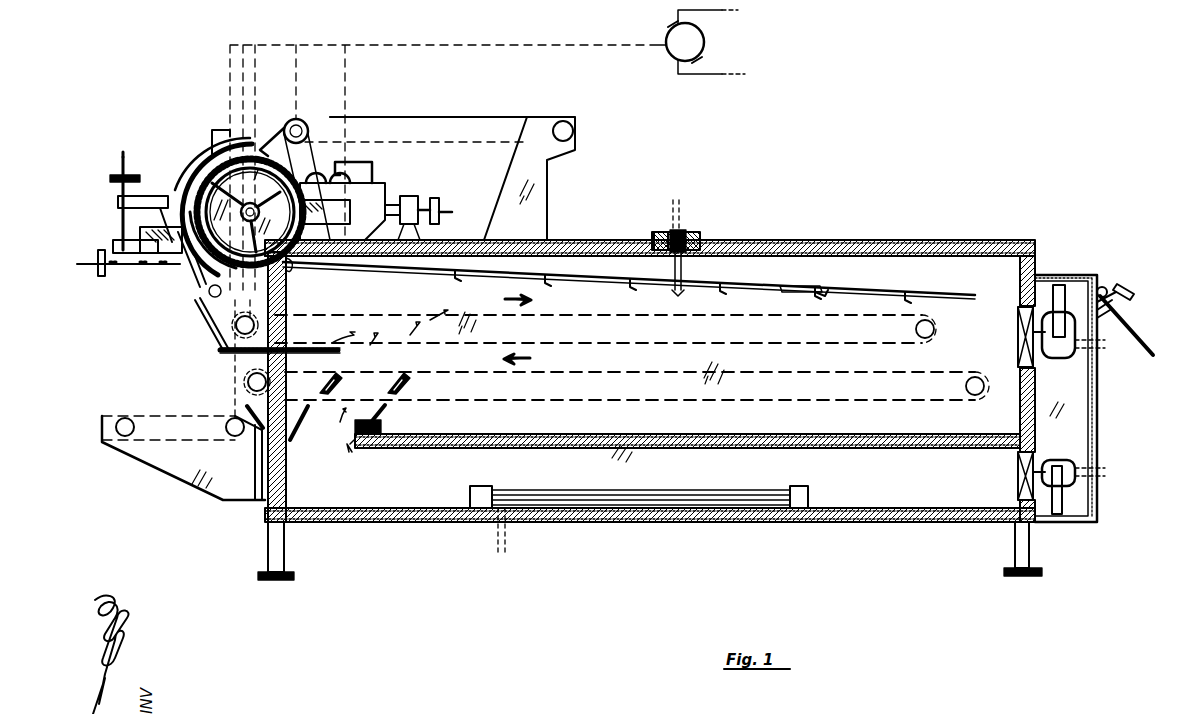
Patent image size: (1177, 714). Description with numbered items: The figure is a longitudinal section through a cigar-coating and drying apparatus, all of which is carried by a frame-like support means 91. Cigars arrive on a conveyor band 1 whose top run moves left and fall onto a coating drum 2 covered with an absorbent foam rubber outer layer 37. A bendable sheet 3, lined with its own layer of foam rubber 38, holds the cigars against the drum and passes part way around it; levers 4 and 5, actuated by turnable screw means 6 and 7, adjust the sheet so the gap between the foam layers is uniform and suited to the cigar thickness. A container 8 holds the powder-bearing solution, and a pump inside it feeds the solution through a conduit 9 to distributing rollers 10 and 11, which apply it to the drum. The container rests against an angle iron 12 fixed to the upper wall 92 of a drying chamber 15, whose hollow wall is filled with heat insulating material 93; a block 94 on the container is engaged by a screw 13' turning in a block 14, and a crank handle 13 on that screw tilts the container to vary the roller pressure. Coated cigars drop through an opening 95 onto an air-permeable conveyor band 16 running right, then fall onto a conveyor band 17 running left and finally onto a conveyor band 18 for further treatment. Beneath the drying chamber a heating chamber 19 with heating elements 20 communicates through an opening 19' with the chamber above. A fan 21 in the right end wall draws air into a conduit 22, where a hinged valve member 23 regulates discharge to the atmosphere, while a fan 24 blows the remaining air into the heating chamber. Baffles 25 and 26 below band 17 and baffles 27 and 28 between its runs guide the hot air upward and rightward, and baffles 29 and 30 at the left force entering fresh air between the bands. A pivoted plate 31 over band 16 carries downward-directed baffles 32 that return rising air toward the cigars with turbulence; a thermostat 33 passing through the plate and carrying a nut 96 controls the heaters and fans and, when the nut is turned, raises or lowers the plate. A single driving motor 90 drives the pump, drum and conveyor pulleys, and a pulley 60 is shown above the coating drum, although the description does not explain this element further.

The conveyor band 1 is at (480, 117).
The coating drum 2 is at (322, 86).
The bendable sheet 3 is at (182, 170).
The lever 4 is at (147, 196).
The lever 5 is at (196, 303).
The turnable screw means 6 is at (108, 162).
The turnable screw means 7 is at (80, 257).
The container 8 is at (342, 211).
The conduit 9 is at (378, 168).
The distributing roller 10 is at (302, 174).
The distributing roller 11 is at (338, 175).
The angle iron 12 is at (320, 232).
The crank handle 13 is at (446, 205).
The screw 13' is at (446, 197).
The block 14 is at (412, 196).
The drying chamber 15 is at (634, 329).
The conveyor band 16 is at (856, 292).
The conveyor band 17 is at (816, 374).
The conveyor band 18 is at (132, 412).
The heating chamber 19 is at (650, 497).
The opening 19' is at (673, 454).
The heating elements 20 is at (682, 487).
The fan 21 is at (1062, 362).
The conduit 22 is at (1096, 430).
The valve member 23 is at (1112, 285).
The fan 24 is at (1064, 460).
The baffle 25 is at (300, 424).
The baffle 26 is at (382, 416).
The baffle 27 is at (342, 388).
The baffle 28 is at (410, 386).
The baffle 29 is at (205, 326).
The baffle 30 is at (242, 400).
The plate 31 is at (782, 286).
The baffles 32 is at (820, 292).
The thermostat 33 is at (668, 232).
The outer layer 37 is at (178, 266).
The layer of foam rubber 38 is at (200, 160).
The drive pulley 60 is at (345, 118).
The driving motor 90 is at (704, 45).
The support means 91 is at (318, 560).
The upper wall 92 is at (890, 242).
The heat insulating material 93 is at (777, 243).
The block 94 is at (392, 204).
The opening 95 is at (286, 299).
The nut 96 is at (688, 232).